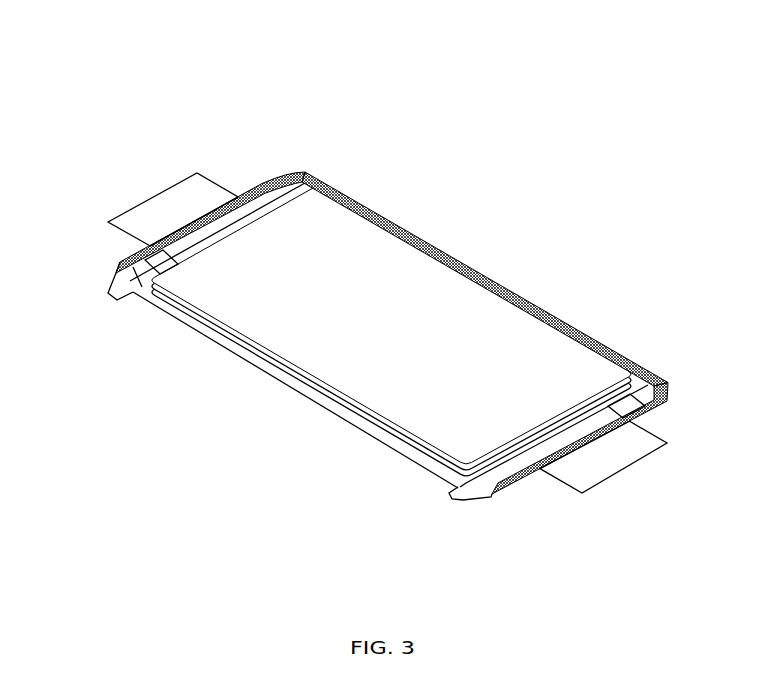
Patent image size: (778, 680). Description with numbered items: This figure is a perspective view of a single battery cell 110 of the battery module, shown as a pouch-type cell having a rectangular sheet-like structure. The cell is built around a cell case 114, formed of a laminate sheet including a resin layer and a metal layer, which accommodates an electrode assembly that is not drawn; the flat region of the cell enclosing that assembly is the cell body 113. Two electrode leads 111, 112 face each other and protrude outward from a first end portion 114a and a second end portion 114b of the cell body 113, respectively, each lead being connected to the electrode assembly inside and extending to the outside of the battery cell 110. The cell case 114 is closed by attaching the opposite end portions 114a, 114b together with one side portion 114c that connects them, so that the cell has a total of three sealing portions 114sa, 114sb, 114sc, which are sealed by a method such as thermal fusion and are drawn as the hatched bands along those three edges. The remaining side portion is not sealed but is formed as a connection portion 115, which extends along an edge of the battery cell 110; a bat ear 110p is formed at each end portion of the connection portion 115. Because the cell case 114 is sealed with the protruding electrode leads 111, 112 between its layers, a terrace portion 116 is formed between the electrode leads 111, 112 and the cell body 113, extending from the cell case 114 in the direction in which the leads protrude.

The battery cell 110 is at (357, 32).
The bat ear 110p is at (117, 295).
The electrode lead 111 is at (168, 208).
The electrode lead 112 is at (630, 467).
The cell body 113 is at (396, 264).
The cell case 114 is at (655, 377).
The first end portion 114a is at (262, 183).
The second end portion 114b is at (521, 493).
The one side portion 114c is at (493, 281).
The sealing portion 114sa is at (244, 192).
The sealing portion 114sb is at (664, 403).
The sealing portion 114sc is at (587, 334).
The connection portion 115 is at (314, 397).
The terrace portion 116 is at (137, 299).